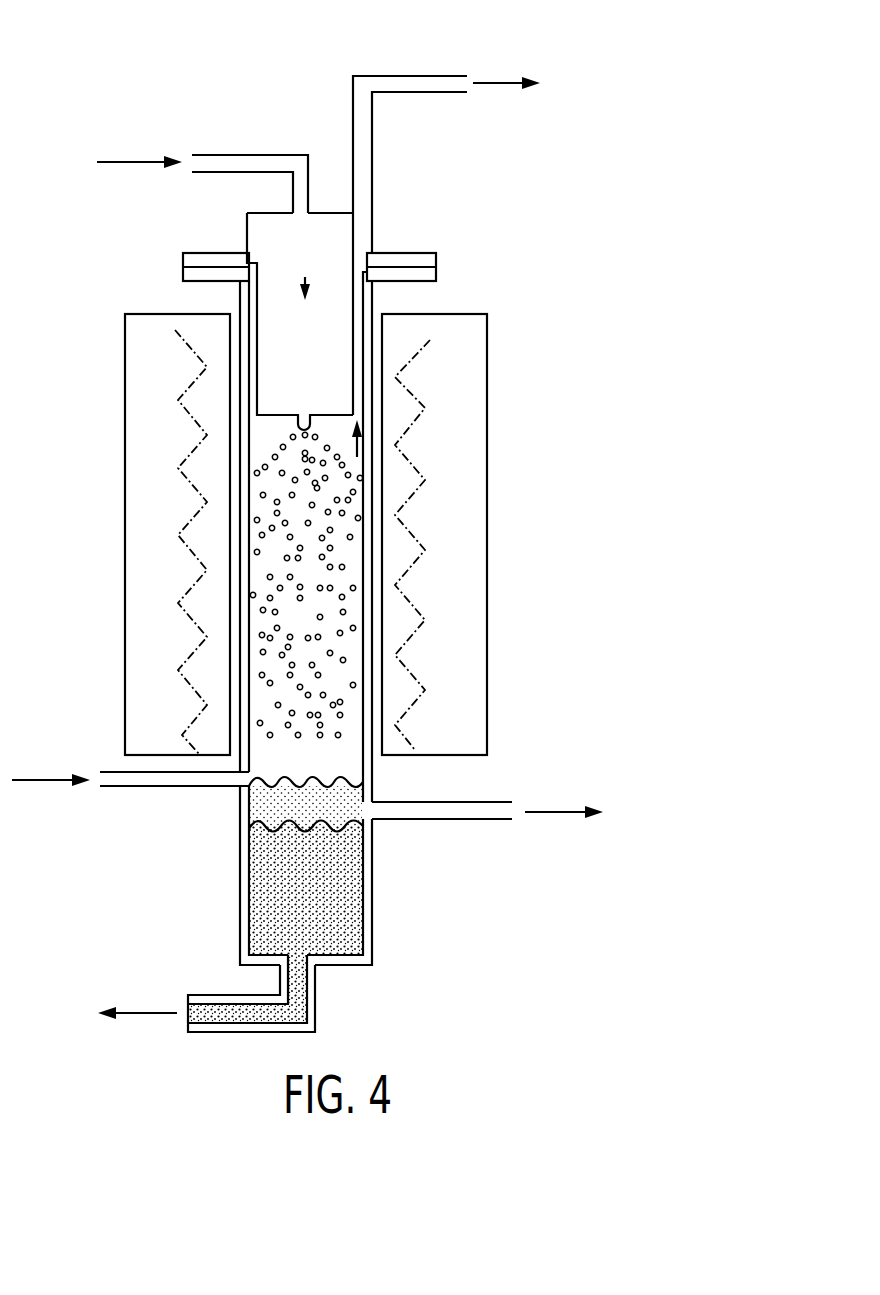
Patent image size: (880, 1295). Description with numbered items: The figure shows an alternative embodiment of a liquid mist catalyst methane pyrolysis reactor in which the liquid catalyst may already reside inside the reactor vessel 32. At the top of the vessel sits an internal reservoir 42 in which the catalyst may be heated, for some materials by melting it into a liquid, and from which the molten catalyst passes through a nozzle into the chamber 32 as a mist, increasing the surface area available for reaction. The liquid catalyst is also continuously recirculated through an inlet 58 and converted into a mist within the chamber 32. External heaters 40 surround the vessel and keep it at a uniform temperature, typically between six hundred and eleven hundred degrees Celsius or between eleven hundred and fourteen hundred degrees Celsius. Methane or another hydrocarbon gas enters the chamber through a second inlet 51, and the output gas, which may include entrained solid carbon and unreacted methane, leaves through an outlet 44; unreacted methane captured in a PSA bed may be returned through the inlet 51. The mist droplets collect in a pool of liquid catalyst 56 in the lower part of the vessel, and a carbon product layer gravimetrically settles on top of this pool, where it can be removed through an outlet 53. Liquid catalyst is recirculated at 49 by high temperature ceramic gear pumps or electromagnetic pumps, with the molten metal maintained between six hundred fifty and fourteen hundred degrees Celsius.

The inlet 58 is at (213, 152).
The outlet 44 is at (386, 75).
The external heaters 40 is at (142, 313).
The internal reservoir 42 is at (318, 391).
The reactor vessel 32 is at (372, 789).
The second inlet 51 is at (130, 790).
The outlet 53 is at (487, 820).
The pool of liquid catalyst 56 is at (355, 895).
The recirculation outlet 49 is at (148, 1013).